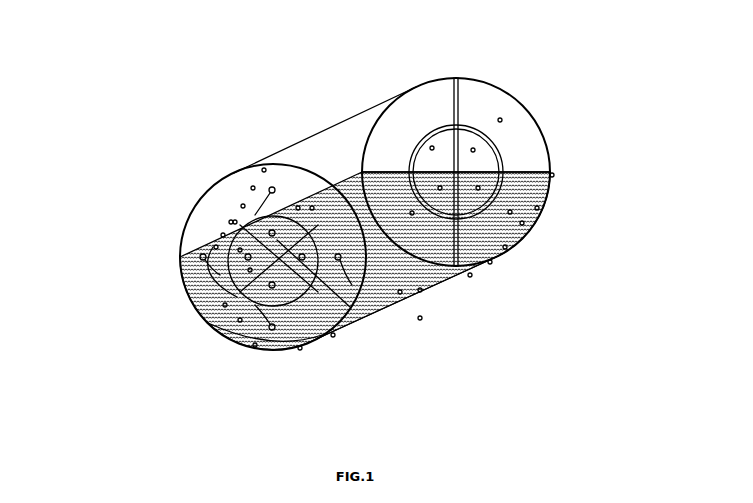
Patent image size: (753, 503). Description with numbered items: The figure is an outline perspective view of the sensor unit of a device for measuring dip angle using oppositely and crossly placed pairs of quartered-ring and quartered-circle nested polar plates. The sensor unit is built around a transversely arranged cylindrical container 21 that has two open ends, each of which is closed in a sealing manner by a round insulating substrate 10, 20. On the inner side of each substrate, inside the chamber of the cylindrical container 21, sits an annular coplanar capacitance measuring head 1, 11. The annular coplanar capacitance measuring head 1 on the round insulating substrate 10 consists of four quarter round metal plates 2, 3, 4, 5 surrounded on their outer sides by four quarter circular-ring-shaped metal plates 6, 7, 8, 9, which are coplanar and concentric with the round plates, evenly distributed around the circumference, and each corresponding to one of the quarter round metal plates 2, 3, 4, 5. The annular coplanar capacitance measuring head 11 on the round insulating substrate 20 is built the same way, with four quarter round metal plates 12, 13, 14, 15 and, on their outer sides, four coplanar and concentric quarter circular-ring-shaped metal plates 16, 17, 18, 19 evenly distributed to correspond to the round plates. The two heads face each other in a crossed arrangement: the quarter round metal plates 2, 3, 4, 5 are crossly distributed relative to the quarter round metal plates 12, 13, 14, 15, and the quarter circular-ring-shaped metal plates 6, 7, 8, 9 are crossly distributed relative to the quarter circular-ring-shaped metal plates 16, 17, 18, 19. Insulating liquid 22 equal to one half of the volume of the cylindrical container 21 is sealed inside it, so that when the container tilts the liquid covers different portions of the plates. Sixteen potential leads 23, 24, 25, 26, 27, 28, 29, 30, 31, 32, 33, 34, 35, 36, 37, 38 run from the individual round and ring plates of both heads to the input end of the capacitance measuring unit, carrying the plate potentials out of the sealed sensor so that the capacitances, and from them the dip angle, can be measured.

The annular coplanar capacitance measuring head 1 is at (583, 121).
The quarter round metal plate 2 is at (473, 150).
The quarter round metal plate 3 is at (432, 148).
The quarter round metal plate 4 is at (440, 188).
The quarter round metal plate 5 is at (478, 188).
The quarter circular-ring-shaped metal plate 6 is at (500, 120).
The quarter circular-ring-shaped metal plate 7 is at (415, 127).
The quarter circular-ring-shaped metal plate 8 is at (412, 213).
The quarter circular-ring-shaped metal plate 9 is at (510, 212).
The round insulating substrate 10 is at (550, 173).
The annular coplanar capacitance measuring head 11 is at (137, 193).
The quarter round metal plate 12 is at (253, 188).
The quarter round metal plate 13 is at (223, 235).
The quarter round metal plate 14 is at (243, 206).
The quarter round metal plate 15 is at (298, 208).
The quarter circular-ring-shaped metal plate 16 is at (264, 170).
The quarter circular-ring-shaped metal plate 17 is at (216, 247).
The quarter circular-ring-shaped metal plate 18 is at (231, 222).
The quarter circular-ring-shaped metal plate 19 is at (312, 208).
The round insulating substrate 20 is at (190, 278).
The cylindrical container 21 is at (357, 133).
The insulating liquid 22 is at (400, 292).
The potential lead 23 is at (537, 208).
The potential lead 24 is at (522, 223).
The potential lead 25 is at (420, 290).
The potential lead 26 is at (490, 262).
The potential lead 27 is at (552, 175).
The potential lead 28 is at (505, 247).
The potential lead 29 is at (420, 318).
The potential lead 30 is at (470, 275).
The potential lead 31 is at (240, 250).
The potential lead 32 is at (225, 305).
The potential lead 33 is at (240, 320).
The potential lead 34 is at (300, 348).
The potential lead 35 is at (235, 222).
The potential lead 36 is at (250, 270).
The potential lead 37 is at (255, 345).
The potential lead 38 is at (333, 335).